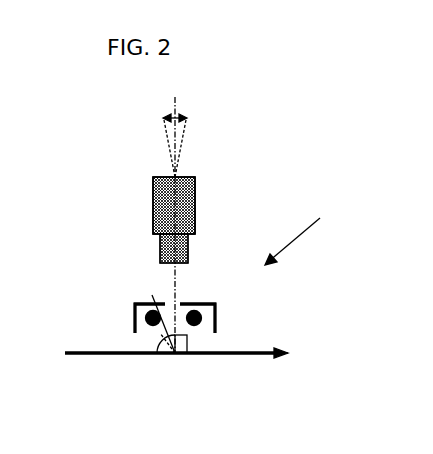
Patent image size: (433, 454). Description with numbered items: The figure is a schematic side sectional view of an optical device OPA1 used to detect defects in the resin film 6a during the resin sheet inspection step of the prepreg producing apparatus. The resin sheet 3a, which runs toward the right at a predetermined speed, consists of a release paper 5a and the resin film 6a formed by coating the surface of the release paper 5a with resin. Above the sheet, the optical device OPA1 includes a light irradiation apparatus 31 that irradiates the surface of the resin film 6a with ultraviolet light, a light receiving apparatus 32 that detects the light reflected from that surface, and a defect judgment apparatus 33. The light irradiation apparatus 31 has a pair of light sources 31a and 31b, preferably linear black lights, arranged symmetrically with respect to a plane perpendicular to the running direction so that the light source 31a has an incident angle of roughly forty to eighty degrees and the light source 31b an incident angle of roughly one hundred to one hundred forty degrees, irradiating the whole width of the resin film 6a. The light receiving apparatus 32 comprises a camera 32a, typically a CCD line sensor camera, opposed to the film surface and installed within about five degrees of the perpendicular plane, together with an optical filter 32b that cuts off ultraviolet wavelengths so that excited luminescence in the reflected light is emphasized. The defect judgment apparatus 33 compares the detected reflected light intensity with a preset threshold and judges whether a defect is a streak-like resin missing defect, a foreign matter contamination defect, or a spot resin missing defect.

The light receiving apparatus 32 is at (158, 198).
The camera 32a is at (158, 228).
The optical filter 32b is at (162, 255).
The defect judgment apparatus 33 is at (187, 208).
The light irradiation apparatus 31 is at (132, 313).
The light source 31a is at (133, 306).
The light source 31b is at (175, 353).
The resin film 6a is at (87, 353).
The release paper 5a is at (88, 353).
The resin sheet 3a is at (215, 355).
The optical device OPA1 is at (313, 233).